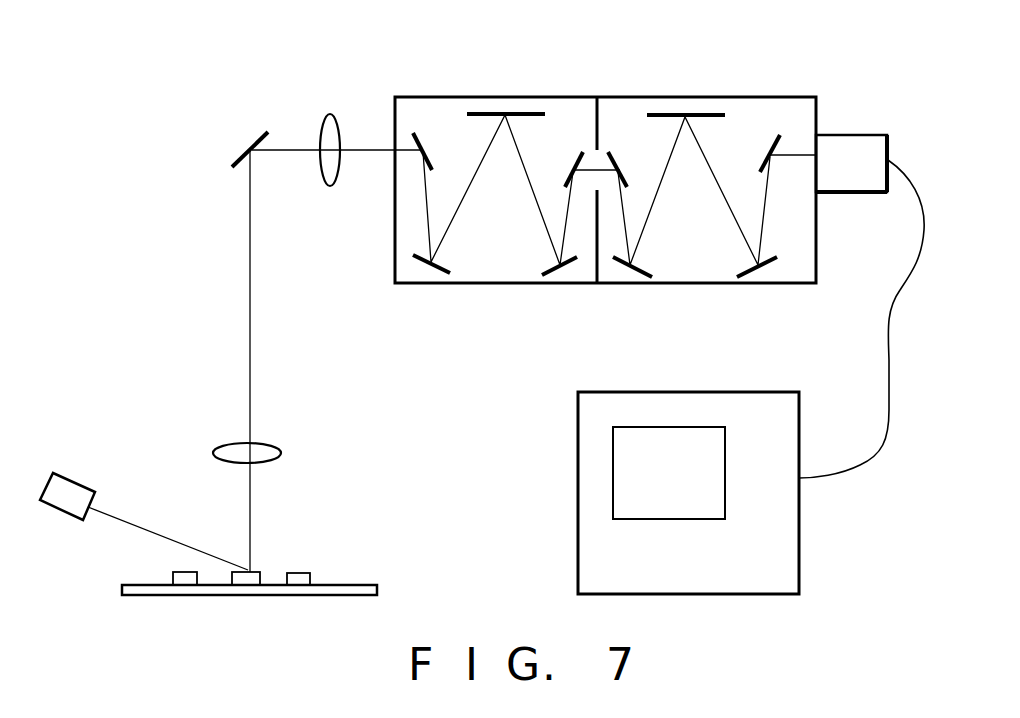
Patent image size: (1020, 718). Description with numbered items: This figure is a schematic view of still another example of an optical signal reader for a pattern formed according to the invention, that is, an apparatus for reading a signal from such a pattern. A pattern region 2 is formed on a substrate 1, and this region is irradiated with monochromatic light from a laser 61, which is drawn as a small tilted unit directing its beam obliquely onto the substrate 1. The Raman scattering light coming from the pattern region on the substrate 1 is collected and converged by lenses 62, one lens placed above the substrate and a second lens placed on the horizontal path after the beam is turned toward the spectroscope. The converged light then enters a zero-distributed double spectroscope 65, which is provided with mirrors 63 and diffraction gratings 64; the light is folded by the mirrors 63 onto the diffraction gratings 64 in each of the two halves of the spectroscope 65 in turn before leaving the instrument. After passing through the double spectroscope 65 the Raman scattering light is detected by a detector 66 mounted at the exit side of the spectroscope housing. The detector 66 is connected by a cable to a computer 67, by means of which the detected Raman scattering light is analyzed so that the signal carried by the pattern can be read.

The substrate 1 is at (365, 594).
The object (pattern element) 2 is at (248, 580).
The laser 61 is at (92, 488).
The lenses 62 is at (328, 120).
The mirrors 63 is at (427, 277).
The diffraction gratings 64 is at (495, 113).
The zero-distributed double spectroscope 65 is at (601, 90).
The detector 66 is at (857, 148).
The display unit 67 is at (788, 549).